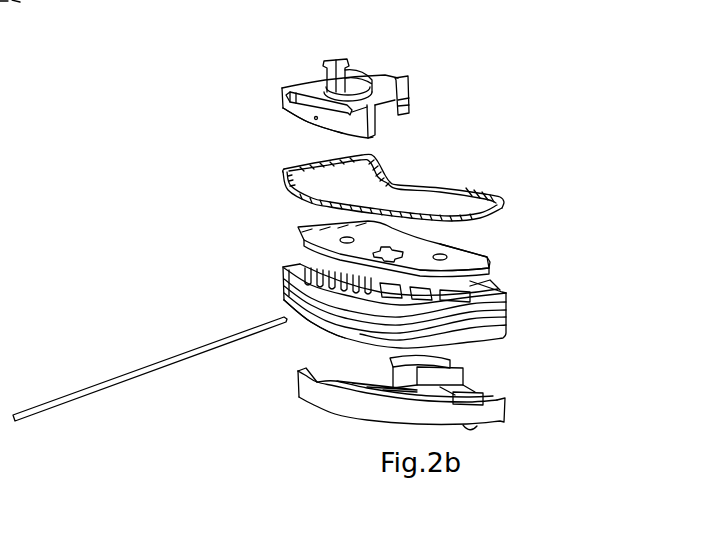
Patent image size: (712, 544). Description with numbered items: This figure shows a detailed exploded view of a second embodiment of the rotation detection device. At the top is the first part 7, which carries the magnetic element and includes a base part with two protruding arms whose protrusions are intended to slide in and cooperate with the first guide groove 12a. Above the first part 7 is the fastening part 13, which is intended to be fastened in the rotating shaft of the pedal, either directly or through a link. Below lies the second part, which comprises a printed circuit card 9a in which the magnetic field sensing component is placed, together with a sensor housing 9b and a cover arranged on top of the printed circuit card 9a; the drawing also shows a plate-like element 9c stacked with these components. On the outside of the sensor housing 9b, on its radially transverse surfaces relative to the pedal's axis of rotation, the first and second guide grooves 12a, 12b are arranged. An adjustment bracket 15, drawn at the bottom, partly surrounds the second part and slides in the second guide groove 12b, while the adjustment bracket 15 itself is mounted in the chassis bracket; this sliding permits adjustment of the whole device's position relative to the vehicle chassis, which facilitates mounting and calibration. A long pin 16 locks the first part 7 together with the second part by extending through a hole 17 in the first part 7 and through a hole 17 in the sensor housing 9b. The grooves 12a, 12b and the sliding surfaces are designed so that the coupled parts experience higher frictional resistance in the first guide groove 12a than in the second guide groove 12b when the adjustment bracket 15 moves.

The first part 7 is at (272, 105).
The fastening part 13 is at (353, 72).
The hole 17 is at (300, 120).
The printed circuit card 9a is at (323, 226).
The sensor housing 9b is at (483, 290).
The cover plate 9c is at (488, 189).
The first guide groove 12a is at (512, 302).
The second guide groove 12b is at (510, 335).
The adjustment bracket 15 is at (505, 405).
The pin 16 is at (163, 360).